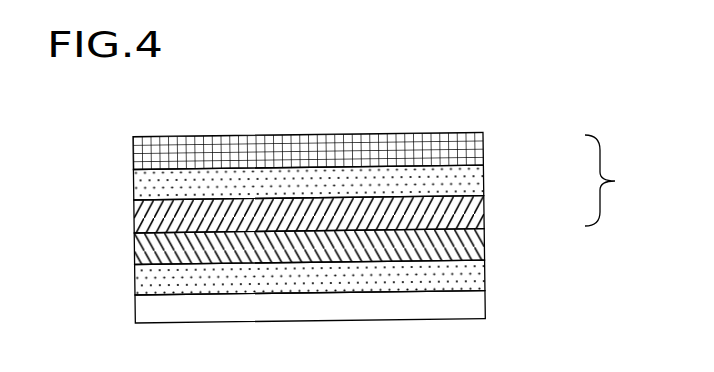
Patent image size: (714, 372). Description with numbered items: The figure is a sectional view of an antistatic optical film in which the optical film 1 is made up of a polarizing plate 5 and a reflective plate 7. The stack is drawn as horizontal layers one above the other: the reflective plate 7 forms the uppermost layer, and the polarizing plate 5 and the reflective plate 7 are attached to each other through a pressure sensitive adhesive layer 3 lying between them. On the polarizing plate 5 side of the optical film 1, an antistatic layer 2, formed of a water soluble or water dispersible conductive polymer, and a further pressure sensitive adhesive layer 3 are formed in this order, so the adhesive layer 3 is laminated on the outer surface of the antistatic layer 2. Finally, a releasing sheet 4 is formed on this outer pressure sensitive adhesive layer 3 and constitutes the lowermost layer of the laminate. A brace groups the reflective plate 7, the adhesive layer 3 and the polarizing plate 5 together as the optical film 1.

The optical film 1 is at (621, 180).
The antistatic layer 2 is at (484, 244).
The pressure sensitive adhesive layer 3 is at (521, 275).
The releasing sheet 4 is at (462, 305).
The polarizing plate 5 is at (463, 210).
The reflective plate 7 is at (484, 147).